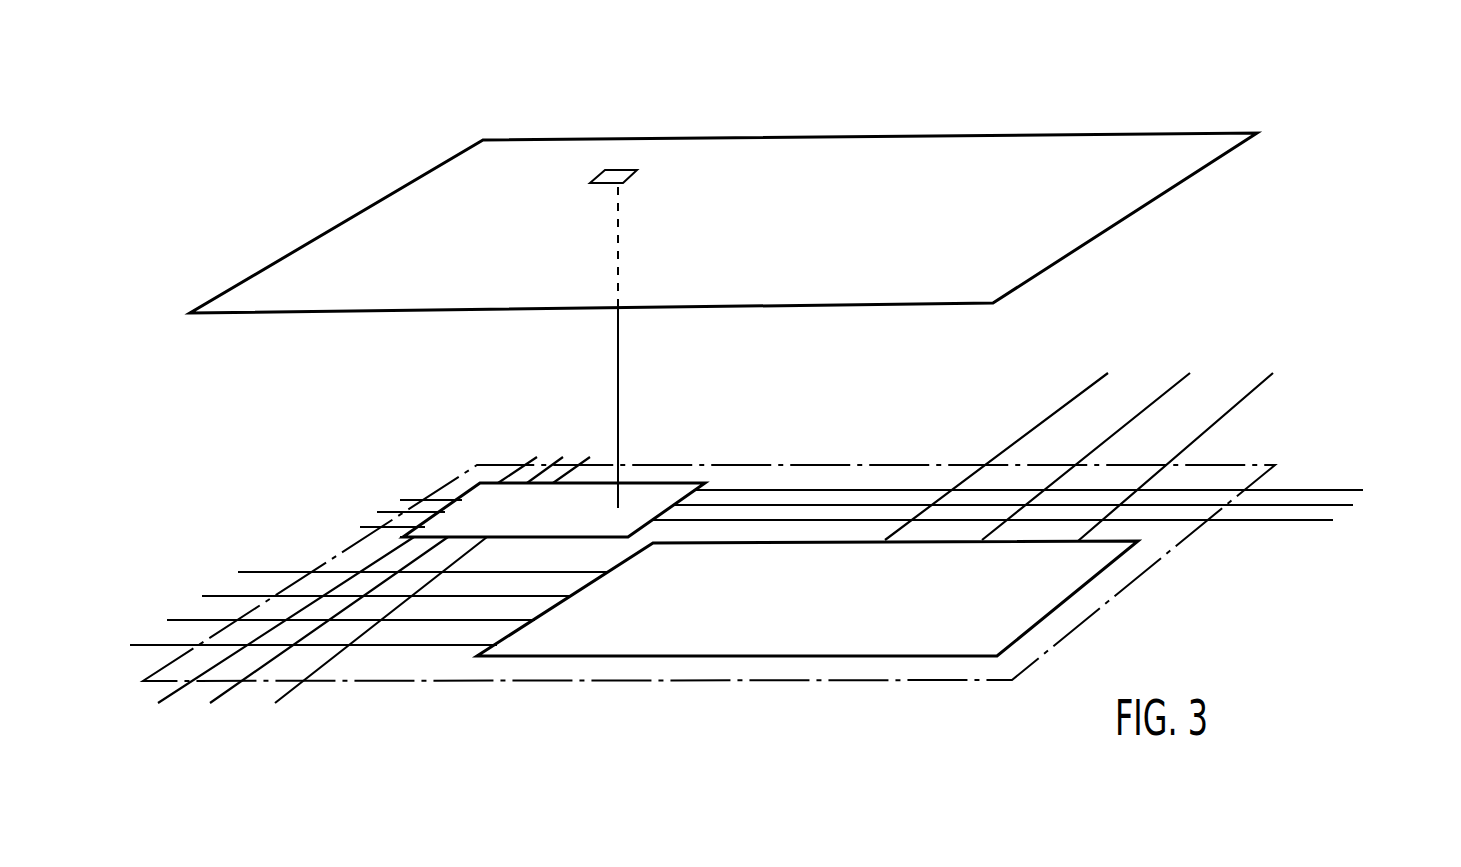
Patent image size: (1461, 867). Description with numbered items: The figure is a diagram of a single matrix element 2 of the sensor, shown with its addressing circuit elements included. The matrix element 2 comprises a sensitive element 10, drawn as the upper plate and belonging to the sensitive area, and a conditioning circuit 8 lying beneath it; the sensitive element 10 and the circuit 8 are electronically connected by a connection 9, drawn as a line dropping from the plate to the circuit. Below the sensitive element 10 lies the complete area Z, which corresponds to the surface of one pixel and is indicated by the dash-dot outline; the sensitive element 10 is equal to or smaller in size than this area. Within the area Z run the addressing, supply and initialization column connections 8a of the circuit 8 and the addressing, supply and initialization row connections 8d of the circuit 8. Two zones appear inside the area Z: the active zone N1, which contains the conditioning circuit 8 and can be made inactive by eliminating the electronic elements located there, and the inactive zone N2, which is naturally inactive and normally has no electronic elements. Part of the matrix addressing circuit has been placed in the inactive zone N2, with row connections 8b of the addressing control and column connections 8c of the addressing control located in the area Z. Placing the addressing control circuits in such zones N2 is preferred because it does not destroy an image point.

The matrix element 2 is at (345, 90).
The sensitive element 10 is at (1058, 228).
The connection 9 is at (618, 376).
The conditioning circuit 8 is at (931, 451).
The addressing, supply and initialization column connections 8a is at (293, 700).
The row connections of the addressing control 8b is at (250, 558).
The column connections of the addressing control 8c is at (1290, 372).
The addressing, supply and initialization row connections 8d is at (1380, 478).
The active zone N1 is at (477, 508).
The inactive zone N2 is at (785, 657).
The area Z is at (1056, 648).